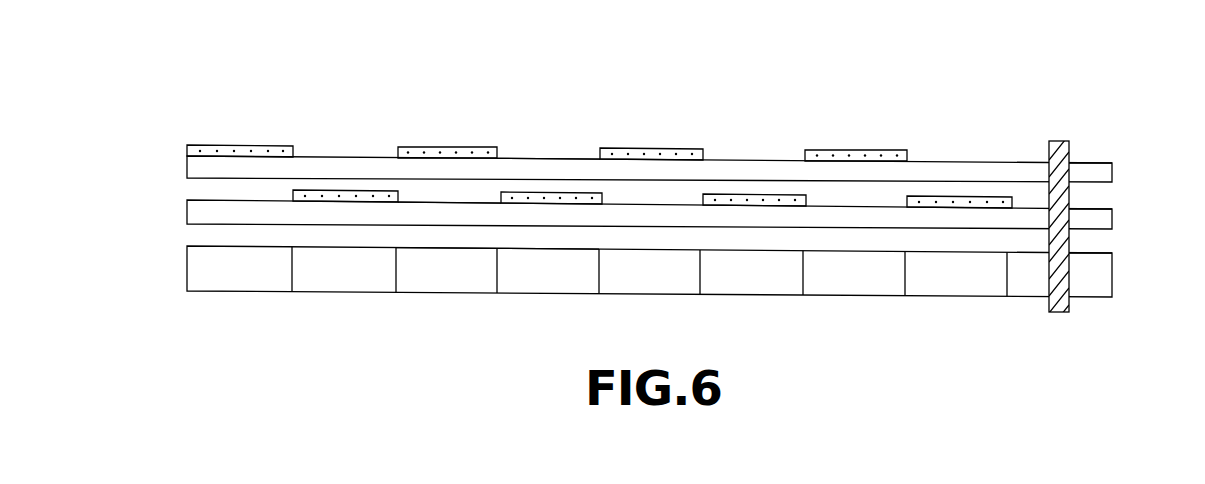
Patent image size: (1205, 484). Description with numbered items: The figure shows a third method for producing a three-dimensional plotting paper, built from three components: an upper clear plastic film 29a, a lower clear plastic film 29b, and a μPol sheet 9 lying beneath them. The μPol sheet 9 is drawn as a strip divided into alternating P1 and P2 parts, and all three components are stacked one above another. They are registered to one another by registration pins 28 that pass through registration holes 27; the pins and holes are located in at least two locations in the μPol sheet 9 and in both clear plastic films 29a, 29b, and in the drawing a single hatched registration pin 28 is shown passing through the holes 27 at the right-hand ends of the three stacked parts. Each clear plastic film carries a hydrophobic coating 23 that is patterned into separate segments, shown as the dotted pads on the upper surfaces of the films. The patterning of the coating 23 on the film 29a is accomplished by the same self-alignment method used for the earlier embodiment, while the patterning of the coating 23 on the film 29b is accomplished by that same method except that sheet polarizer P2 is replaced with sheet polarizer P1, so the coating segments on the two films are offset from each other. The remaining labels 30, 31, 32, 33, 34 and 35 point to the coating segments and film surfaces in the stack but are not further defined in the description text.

The μPol sheet 9 is at (193, 273).
The hydrophobic coating 23 is at (265, 152).
The registration holes 27 is at (1080, 177).
The registration pins 28 is at (1065, 147).
The clear plastic film 29a is at (192, 168).
The clear plastic film 29b is at (192, 213).
The electrode 30 is at (452, 152).
The electrode 31 is at (432, 204).
The electrode 32 is at (450, 245).
The surface layer 33 is at (542, 157).
The electrode 34 is at (602, 198).
The electrode 35 is at (542, 245).